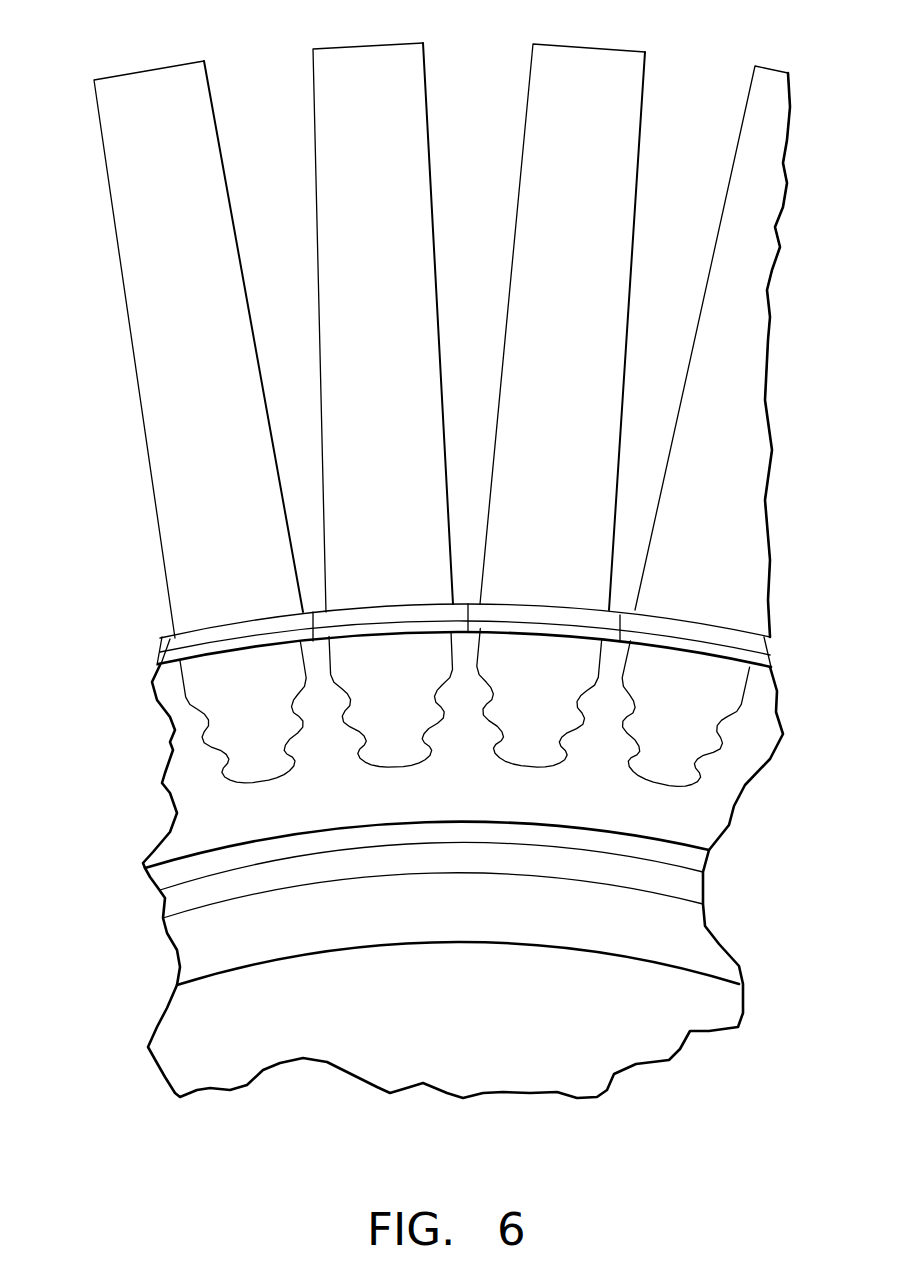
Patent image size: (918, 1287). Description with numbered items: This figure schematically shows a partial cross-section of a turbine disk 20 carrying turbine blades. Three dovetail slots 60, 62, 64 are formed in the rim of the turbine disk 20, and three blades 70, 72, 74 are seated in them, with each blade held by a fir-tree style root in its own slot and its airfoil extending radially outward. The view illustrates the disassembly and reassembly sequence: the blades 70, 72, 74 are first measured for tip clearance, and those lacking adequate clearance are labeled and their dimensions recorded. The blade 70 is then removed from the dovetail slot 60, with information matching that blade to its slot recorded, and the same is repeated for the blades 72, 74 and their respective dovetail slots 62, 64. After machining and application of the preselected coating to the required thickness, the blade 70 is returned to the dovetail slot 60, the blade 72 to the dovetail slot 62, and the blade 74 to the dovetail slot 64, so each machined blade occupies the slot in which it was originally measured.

The turbine disk 20 is at (163, 782).
The dovetail slot 60 is at (262, 783).
The dovetail slot 62 is at (395, 766).
The dovetail slot 64 is at (530, 764).
The blade 70 is at (106, 167).
The blade 72 is at (315, 145).
The blade 74 is at (524, 138).